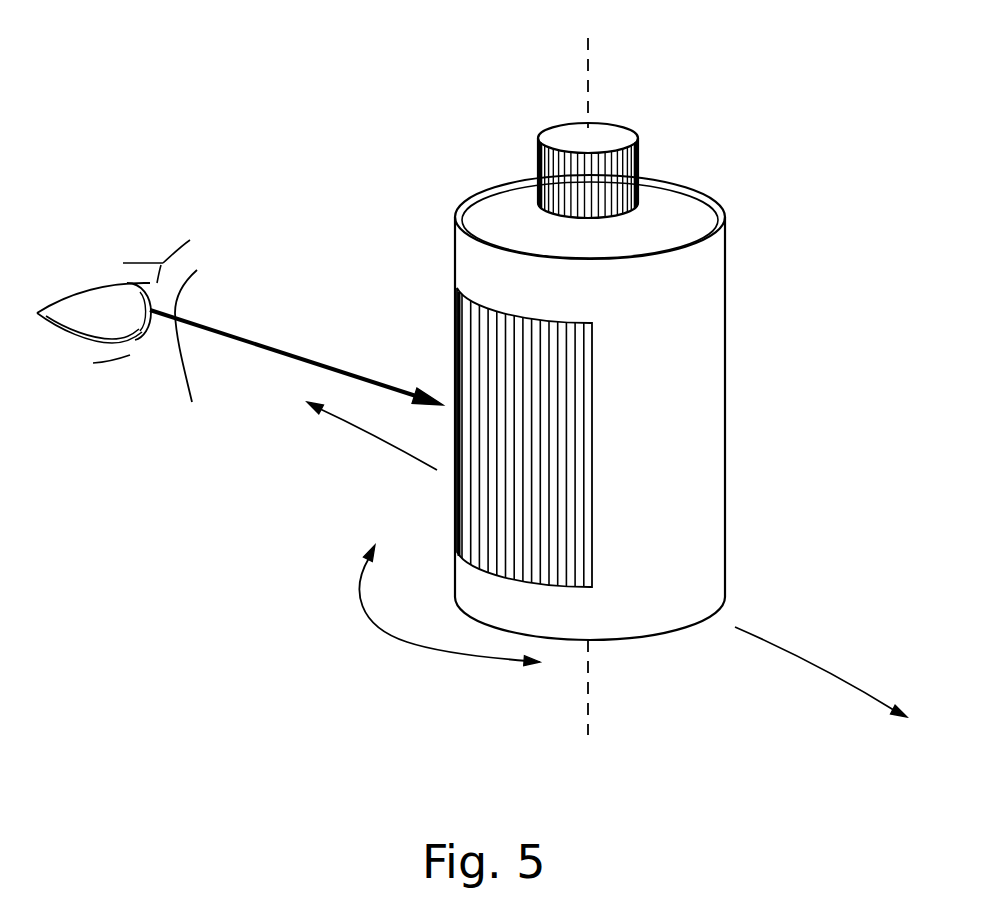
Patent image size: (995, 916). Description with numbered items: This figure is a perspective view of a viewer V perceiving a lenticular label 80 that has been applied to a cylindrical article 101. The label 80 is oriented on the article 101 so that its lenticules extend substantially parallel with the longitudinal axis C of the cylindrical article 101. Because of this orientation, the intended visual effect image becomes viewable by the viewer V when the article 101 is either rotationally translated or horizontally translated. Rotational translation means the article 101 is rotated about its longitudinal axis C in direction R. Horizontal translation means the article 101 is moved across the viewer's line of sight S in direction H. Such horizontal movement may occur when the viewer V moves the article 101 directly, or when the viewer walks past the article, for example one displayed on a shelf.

The cylindrical article 101 is at (725, 330).
The label 80 is at (572, 435).
The longitudinal axis C is at (587, 372).
The viewer V is at (102, 270).
The line of sight S is at (260, 350).
The direction of horizontal translation H is at (407, 455).
The direction of rotation R is at (407, 643).